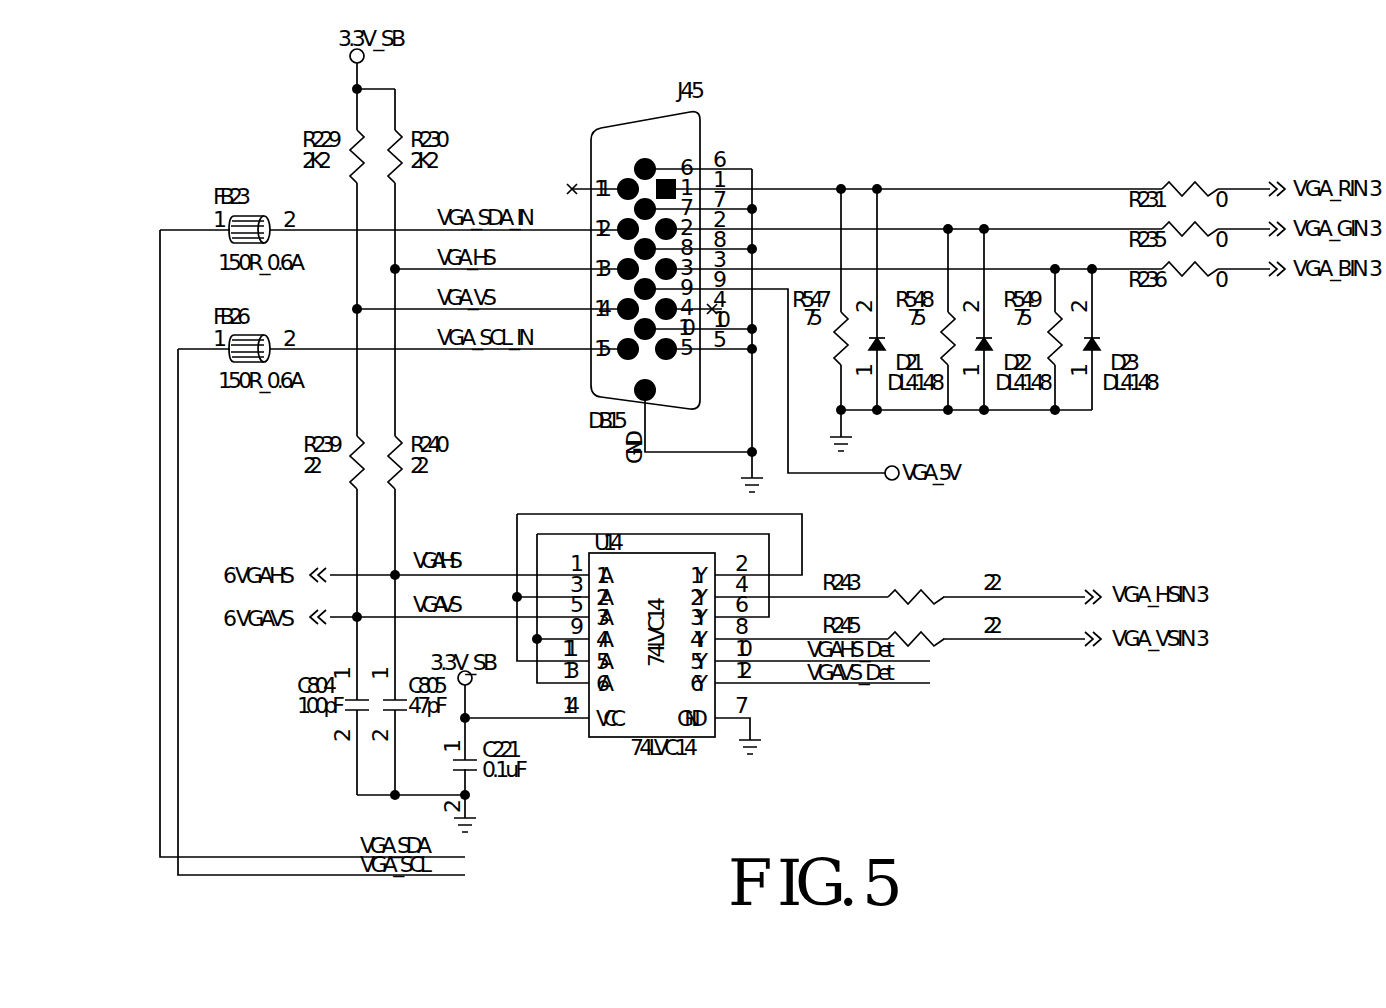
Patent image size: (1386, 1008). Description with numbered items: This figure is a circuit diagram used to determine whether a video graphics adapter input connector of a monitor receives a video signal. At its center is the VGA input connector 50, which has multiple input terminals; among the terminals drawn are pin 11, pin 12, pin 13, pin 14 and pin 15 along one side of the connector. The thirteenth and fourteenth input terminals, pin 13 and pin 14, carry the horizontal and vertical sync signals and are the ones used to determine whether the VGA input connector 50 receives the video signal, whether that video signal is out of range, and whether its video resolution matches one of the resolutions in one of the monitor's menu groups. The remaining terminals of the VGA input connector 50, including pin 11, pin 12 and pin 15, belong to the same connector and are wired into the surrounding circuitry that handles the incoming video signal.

The VGA input connector 50 is at (633, 128).
The connector pin 11 (no connect) 11 is at (592, 178).
The connector pin 12 VGA_SDA_IN line 12 is at (394, 225).
The connector pin 13 VGA_HS line 13 is at (511, 260).
The connector pin 14 VGA_VS line 14 is at (492, 300).
The connector pin 15 VGA_SCL_IN line 15 is at (403, 345).